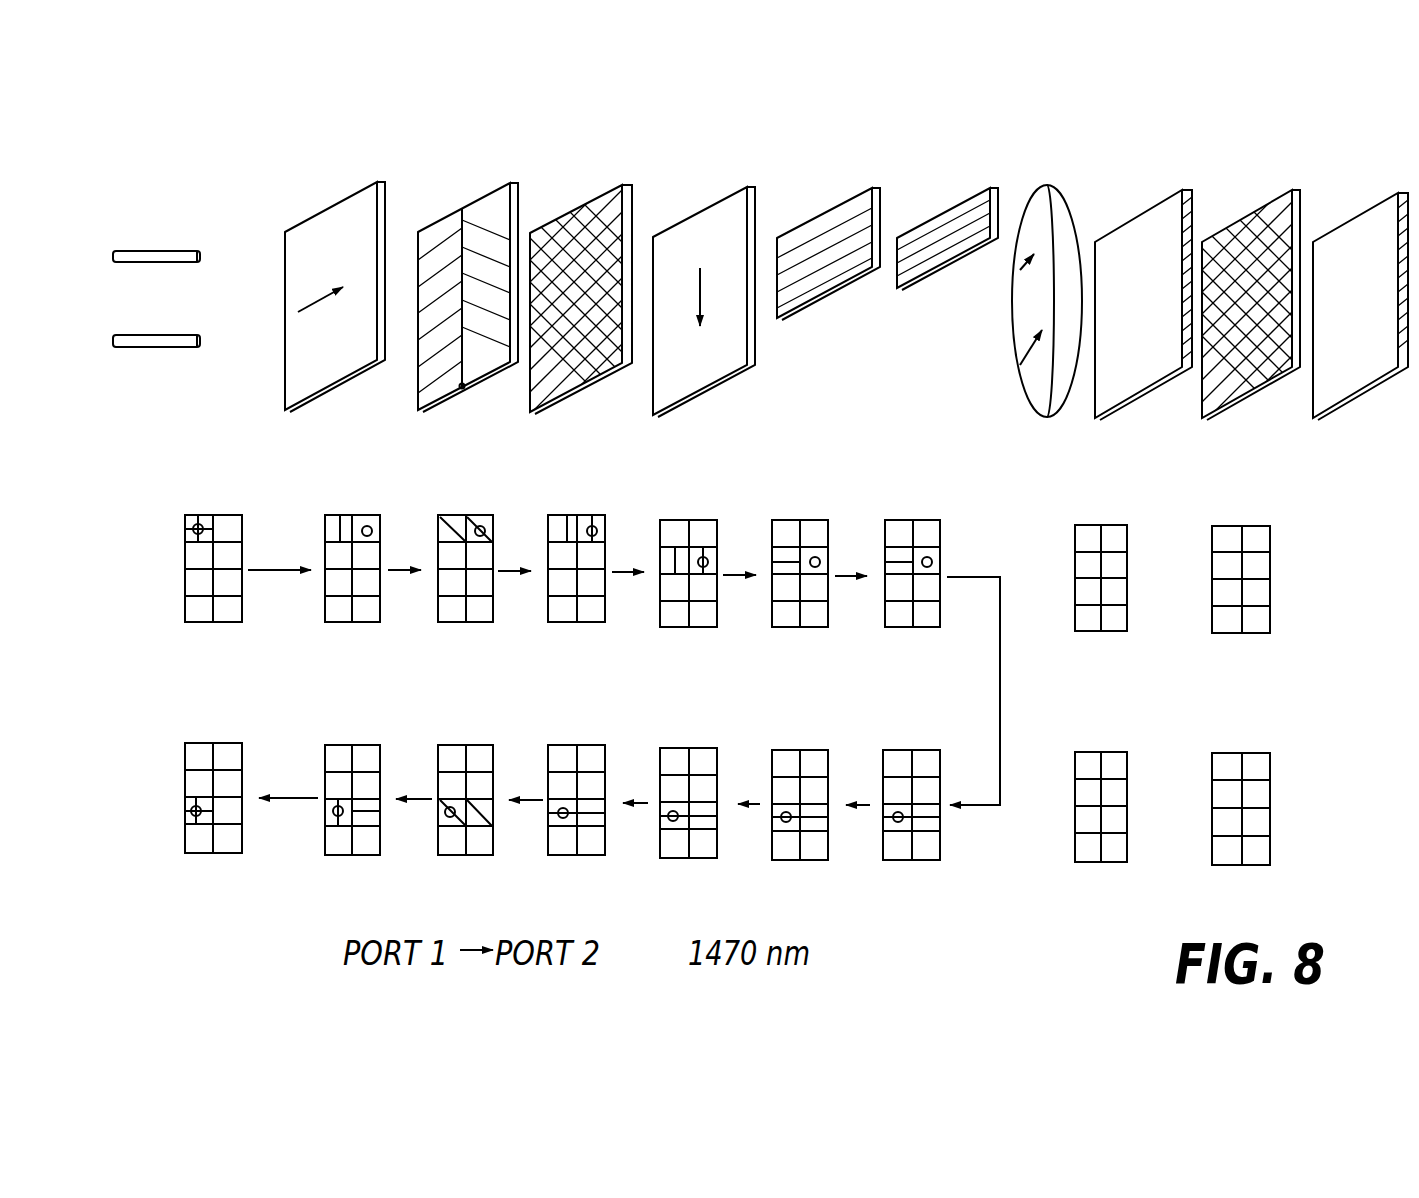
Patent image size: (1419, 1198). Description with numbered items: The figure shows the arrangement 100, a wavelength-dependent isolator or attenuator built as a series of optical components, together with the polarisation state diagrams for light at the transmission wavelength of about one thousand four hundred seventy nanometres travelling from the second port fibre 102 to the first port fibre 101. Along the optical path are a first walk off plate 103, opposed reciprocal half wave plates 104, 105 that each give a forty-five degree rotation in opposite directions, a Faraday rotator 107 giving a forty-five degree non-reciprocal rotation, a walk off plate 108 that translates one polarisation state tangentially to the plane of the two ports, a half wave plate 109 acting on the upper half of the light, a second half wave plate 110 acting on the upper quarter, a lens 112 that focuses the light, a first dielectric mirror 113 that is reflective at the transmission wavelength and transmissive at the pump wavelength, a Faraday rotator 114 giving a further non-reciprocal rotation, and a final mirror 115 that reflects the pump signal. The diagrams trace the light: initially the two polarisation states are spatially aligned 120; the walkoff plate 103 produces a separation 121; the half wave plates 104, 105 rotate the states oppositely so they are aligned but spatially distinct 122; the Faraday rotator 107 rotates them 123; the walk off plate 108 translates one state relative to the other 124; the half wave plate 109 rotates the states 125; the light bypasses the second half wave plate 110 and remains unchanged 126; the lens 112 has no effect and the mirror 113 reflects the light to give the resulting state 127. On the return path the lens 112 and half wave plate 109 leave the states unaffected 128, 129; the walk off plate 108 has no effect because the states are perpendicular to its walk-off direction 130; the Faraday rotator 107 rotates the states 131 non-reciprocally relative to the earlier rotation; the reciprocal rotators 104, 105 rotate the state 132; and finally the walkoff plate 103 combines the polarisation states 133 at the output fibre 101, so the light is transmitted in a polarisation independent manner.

The arrangement 100 is at (1322, 530).
The fibre (Port 1) 101 is at (157, 348).
The fibre (Port 2) 102 is at (170, 252).
The first walk off plate 103 is at (342, 383).
The reciprocal half wave plate 104 is at (443, 400).
The reciprocal half wave plate 105 is at (493, 373).
The Faraday rotator 107 is at (583, 390).
The walk off plate 108 is at (693, 400).
The half wave plate 109 is at (820, 308).
The second half wave plate 110 is at (937, 278).
The lens 112 is at (1053, 415).
The first dielectric mirror 113 is at (1145, 400).
The Faraday rotator 114 is at (1255, 397).
The final mirror 115 is at (1357, 400).
The spatially aligned polarisation states 120 is at (210, 622).
The separation of polarisation states 121 is at (343, 622).
The aligned but spatially distinct polarisation states 122 is at (468, 622).
The rotated polarisation states 123 is at (578, 622).
The translated polarisation states 124 is at (690, 627).
The rotated polarisation states 125 is at (803, 627).
The unchanged polarisation states 126 is at (915, 627).
The resulting polarisation state 127 is at (915, 860).
The polarisation states 128 is at (800, 860).
The polarisation states 129 is at (687, 858).
The polarisation states 130 is at (575, 855).
The rotated polarisation states 131 is at (463, 858).
The rotated polarisation states 132 is at (352, 858).
The combined polarisation states 133 is at (212, 853).